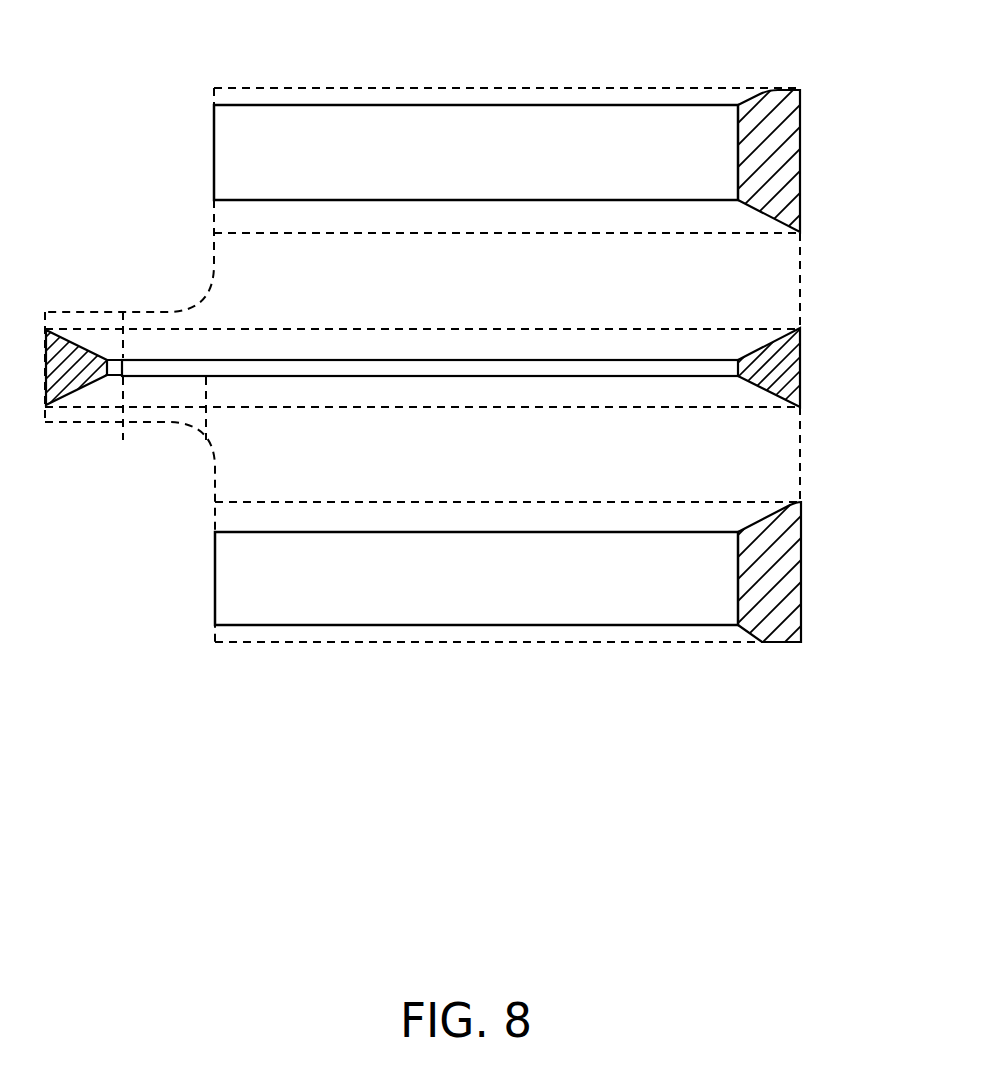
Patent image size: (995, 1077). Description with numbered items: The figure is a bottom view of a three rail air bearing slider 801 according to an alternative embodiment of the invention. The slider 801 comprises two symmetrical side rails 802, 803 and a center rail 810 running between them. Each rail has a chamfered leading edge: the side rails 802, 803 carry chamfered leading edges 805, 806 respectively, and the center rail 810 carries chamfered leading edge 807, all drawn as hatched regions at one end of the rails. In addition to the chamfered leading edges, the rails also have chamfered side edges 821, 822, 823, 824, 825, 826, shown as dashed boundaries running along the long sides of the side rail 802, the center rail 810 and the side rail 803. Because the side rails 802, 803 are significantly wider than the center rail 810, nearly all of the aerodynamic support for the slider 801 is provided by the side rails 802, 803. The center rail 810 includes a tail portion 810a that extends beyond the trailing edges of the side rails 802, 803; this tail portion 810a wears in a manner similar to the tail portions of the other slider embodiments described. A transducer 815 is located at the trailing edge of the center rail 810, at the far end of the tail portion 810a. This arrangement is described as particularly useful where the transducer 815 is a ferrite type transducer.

The slider 801 is at (803, 702).
The side rail 802 is at (432, 143).
The side rail 803 is at (545, 598).
The chamfered leading edge 805 is at (787, 128).
The chamfered leading edge 806 is at (790, 558).
The chamfered leading edge 807 is at (787, 345).
The center rail 810 is at (417, 363).
The tail portion 810a is at (206, 442).
The transducer 815 is at (114, 357).
The chamfered side edge 821 is at (600, 95).
The chamfered side edge 822 is at (620, 222).
The chamfered side edge 823 is at (573, 343).
The chamfered side edge 824 is at (583, 392).
The chamfered side edge 825 is at (572, 517).
The chamfered side edge 826 is at (638, 632).